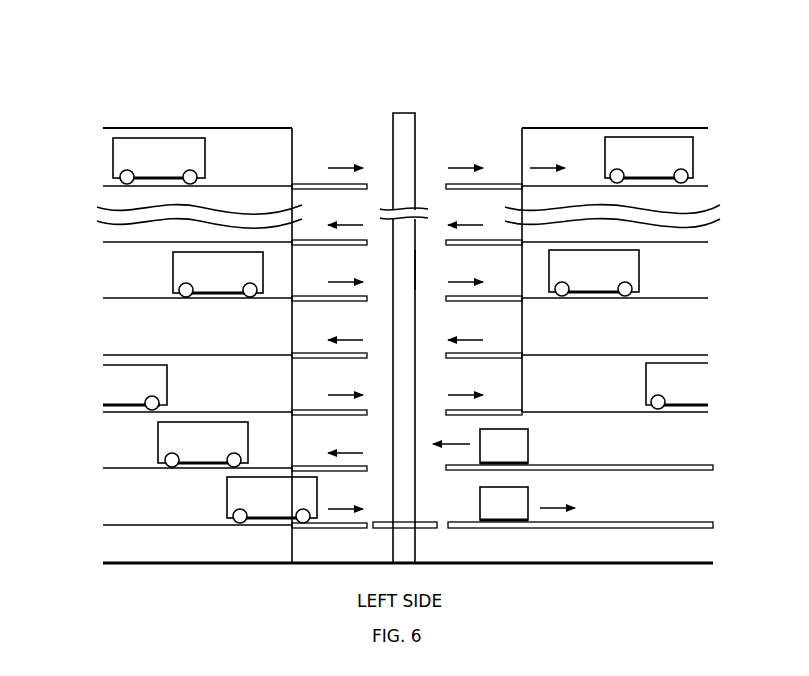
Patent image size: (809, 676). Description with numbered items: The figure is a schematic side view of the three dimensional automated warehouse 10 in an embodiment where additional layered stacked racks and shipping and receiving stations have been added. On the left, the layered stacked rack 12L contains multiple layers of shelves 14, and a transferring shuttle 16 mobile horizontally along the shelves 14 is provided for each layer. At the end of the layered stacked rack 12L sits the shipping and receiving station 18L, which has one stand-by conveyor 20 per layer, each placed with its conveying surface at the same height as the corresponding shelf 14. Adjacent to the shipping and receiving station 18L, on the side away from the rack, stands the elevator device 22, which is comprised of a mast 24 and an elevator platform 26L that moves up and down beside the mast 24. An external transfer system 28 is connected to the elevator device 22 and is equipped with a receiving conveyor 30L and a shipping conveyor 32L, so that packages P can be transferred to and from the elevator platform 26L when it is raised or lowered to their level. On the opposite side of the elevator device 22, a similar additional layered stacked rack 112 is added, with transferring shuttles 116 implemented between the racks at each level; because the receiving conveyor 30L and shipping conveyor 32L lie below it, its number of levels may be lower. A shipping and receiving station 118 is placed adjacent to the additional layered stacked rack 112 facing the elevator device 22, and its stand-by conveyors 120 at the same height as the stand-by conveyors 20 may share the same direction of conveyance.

The three dimensional automated warehouse 10 is at (387, 79).
The layered stacked rack 12L is at (275, 123).
The shelf 14 is at (238, 355).
The transferring shuttle 16 is at (172, 145).
The shipping and receiving station 18L is at (327, 146).
The stand-by conveyor 20 is at (334, 302).
The elevator device 22 is at (420, 146).
The mast 24 is at (416, 270).
The elevator platform 26L is at (436, 529).
The external transfer system 28 is at (705, 447).
The receiving conveyor 30L is at (598, 470).
The shipping conveyor 32L is at (572, 529).
The additional layered stacked rack 112 is at (577, 123).
The transferring shuttle 116 is at (640, 145).
The shipping and receiving station 118 is at (484, 134).
The stand-by conveyor 120 is at (498, 300).
The package P is at (529, 448).